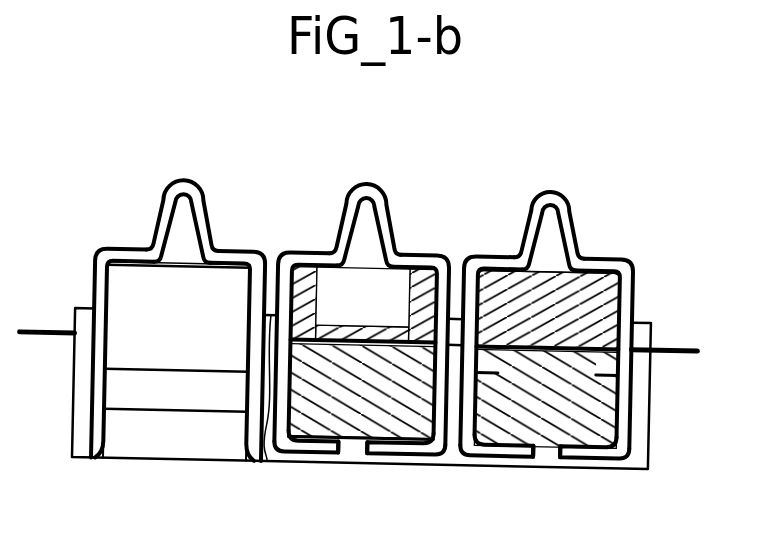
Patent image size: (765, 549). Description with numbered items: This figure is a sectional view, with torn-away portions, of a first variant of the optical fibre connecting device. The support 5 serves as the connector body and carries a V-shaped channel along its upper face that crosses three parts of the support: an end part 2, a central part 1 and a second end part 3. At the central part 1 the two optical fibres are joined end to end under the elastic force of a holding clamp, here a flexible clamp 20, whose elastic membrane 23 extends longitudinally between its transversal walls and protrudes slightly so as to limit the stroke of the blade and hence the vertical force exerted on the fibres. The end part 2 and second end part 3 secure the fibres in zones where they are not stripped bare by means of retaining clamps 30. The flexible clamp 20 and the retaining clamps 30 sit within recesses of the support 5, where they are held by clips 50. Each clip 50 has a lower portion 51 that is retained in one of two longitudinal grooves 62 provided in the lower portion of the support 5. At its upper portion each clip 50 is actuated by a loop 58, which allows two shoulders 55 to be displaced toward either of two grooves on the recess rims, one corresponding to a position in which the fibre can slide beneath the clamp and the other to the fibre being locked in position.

The central part 1 is at (412, 412).
The end part 2 is at (124, 302).
The second end part 3 is at (597, 406).
The support 5 is at (641, 396).
The flexible clamp 20 is at (421, 278).
The elastic membrane 23 is at (335, 322).
The retaining clamp 30 is at (129, 274).
The clip 50 is at (363, 319).
The lower portion 51 is at (325, 448).
The shoulders 55 is at (379, 270).
The loop 58 is at (199, 194).
The longitudinal grooves 62 is at (357, 448).